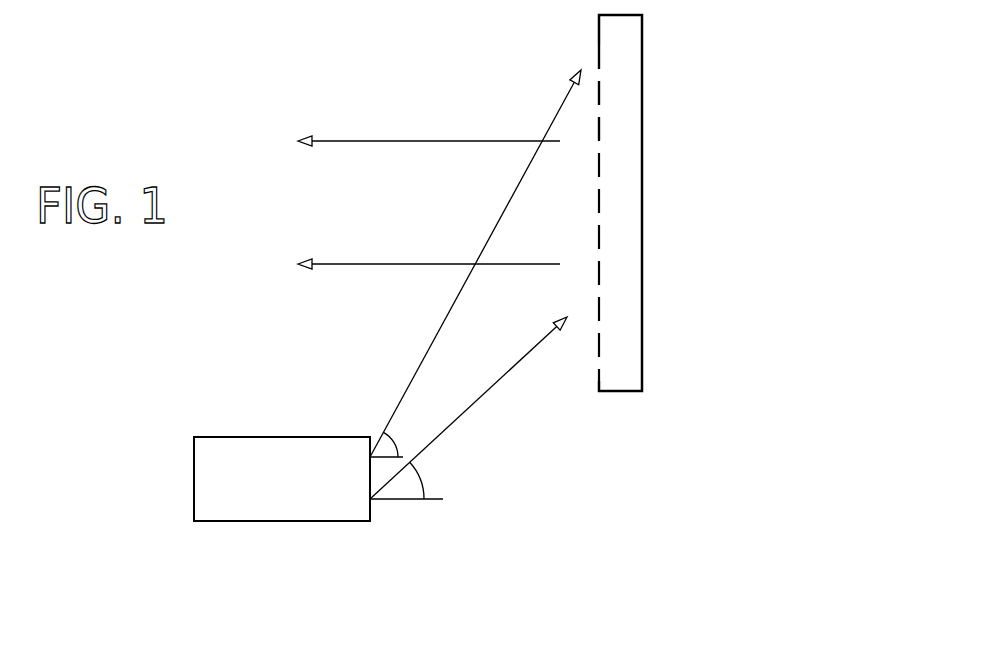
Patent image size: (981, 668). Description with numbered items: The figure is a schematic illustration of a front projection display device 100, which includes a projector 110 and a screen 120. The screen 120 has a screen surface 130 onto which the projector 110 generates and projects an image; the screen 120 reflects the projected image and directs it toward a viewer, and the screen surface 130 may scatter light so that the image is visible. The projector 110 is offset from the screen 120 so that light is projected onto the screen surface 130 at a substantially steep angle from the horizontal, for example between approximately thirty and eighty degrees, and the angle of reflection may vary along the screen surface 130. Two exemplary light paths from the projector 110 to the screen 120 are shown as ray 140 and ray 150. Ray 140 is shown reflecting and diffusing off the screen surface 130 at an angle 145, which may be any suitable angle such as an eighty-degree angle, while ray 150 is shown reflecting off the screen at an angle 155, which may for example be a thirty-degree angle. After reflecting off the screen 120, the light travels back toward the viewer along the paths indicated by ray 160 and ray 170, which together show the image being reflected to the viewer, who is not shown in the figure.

The front projection display device 100 is at (698, 118).
The projector 110 is at (315, 521).
The screen 120 is at (642, 251).
The screen surface 130 is at (598, 43).
The ray 140 is at (418, 365).
The angle 145 is at (395, 442).
The ray 150 is at (473, 405).
The angle 155 is at (421, 482).
The ray 160 is at (429, 131).
The ray 170 is at (429, 254).